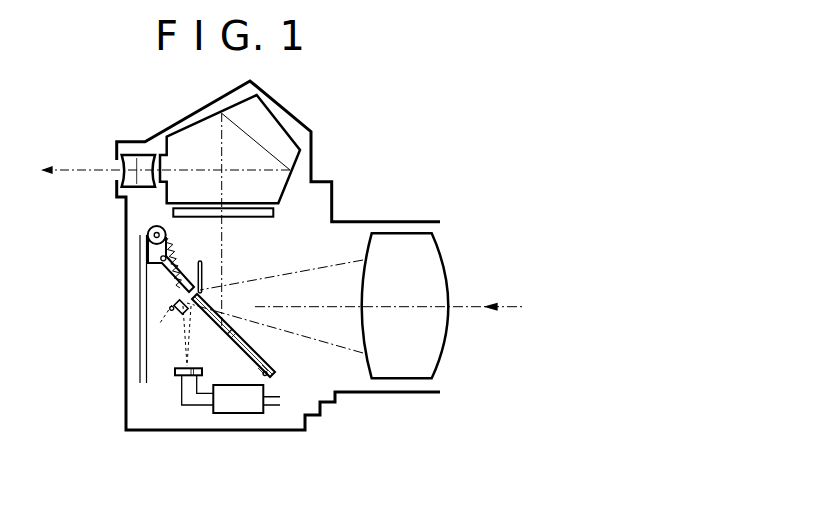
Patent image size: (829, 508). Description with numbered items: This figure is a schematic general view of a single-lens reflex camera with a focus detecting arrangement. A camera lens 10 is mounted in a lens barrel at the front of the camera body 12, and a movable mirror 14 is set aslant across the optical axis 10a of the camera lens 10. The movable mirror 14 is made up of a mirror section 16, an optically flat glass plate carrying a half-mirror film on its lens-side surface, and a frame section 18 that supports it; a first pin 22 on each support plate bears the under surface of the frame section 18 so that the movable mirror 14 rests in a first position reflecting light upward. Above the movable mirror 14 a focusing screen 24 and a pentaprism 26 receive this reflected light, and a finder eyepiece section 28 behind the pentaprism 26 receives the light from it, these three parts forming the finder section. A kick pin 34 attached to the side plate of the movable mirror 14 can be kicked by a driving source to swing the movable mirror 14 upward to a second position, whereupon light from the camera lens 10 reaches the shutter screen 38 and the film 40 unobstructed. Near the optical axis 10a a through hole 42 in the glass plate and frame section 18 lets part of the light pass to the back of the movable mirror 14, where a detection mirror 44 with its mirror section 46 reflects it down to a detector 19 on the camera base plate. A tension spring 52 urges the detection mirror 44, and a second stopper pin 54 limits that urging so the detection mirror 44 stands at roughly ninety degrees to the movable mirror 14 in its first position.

The camera lens 10 is at (438, 260).
The optical axis 10a is at (427, 307).
The camera body 12 is at (395, 221).
The movable mirror 14 is at (279, 369).
The mirror section 16 is at (276, 356).
The frame section 18 is at (233, 348).
The detector 19 is at (178, 370).
The first pin 22 is at (268, 376).
The focusing screen 24 is at (270, 219).
The pentaprism 26 is at (287, 125).
The finder eyepiece section 28 is at (112, 173).
The kick pin 34 is at (150, 262).
The shutter screen 38 is at (145, 370).
The film 40 is at (138, 357).
The through hole 42 is at (173, 303).
The detection mirror 44 is at (205, 273).
The mirror section 46 is at (186, 320).
The tension spring 52 is at (181, 239).
The second stopper pin 54 is at (170, 312).